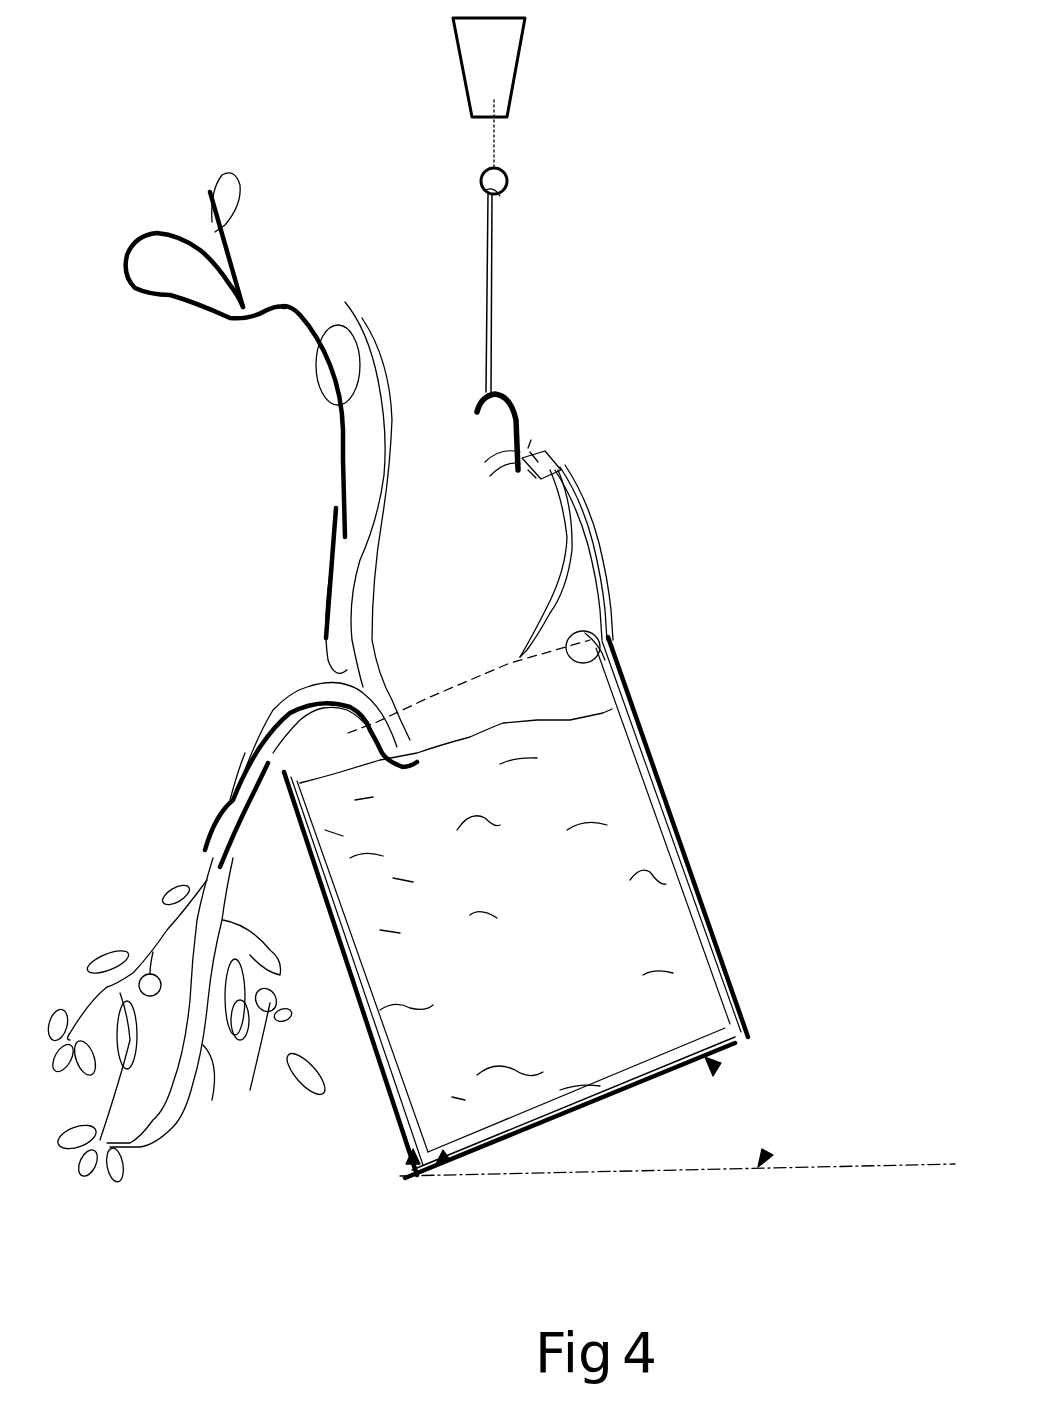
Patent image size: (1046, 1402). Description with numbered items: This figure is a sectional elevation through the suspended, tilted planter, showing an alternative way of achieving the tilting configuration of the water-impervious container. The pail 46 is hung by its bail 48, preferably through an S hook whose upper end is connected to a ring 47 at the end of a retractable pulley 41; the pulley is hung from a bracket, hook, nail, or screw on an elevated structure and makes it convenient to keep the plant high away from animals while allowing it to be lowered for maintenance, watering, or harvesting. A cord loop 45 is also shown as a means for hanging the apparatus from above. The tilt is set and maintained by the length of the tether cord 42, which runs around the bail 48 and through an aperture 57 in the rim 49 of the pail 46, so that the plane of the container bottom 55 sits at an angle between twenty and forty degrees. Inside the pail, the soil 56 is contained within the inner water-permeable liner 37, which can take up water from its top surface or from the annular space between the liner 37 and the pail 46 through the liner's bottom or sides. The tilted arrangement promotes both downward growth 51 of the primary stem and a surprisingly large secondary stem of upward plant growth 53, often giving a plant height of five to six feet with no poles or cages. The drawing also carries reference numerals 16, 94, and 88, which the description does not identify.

The retractable pulley 41 is at (505, 70).
The ring 47 is at (483, 190).
The cord loop 45 is at (497, 313).
The hook 16 is at (517, 413).
The tether cord 42 is at (603, 555).
The bail 48 is at (545, 578).
The aperture 57 is at (608, 635).
The pail 46 is at (733, 991).
The rim 49 is at (283, 773).
The container bottom 55 is at (623, 1093).
The soil 56 is at (406, 824).
The inner water-permeable liner 37 is at (285, 758).
The upward plant growth 53 is at (337, 563).
The downward growth 51 is at (200, 875).
The tilt angle 94 is at (720, 1070).
The ground plane 88 is at (888, 1165).